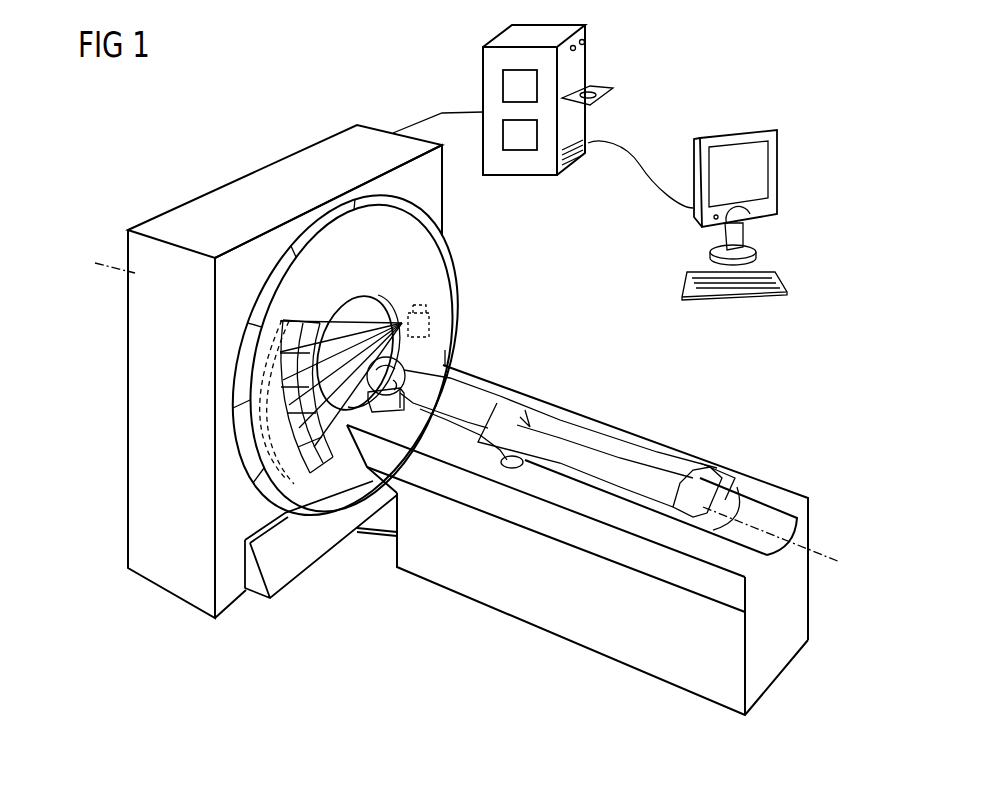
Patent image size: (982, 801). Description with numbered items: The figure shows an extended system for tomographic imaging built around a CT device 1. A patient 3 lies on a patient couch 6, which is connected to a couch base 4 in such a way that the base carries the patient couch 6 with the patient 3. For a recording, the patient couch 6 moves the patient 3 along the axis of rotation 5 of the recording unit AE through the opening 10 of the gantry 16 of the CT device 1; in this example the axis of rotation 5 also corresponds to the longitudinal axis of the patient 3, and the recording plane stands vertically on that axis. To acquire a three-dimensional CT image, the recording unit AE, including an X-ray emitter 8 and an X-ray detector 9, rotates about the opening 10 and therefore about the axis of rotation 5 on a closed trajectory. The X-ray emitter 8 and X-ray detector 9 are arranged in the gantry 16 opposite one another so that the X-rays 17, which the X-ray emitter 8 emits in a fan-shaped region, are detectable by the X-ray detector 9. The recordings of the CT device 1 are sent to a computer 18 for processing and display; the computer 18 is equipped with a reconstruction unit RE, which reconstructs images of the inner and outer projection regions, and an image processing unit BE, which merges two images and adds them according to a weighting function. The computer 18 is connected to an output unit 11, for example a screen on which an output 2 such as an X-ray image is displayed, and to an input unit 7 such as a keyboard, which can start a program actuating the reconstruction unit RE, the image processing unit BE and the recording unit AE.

The CT device 1 is at (172, 154).
The output 2 is at (730, 155).
The patient 3 is at (485, 402).
The couch base 4 is at (572, 617).
The axis of rotation 5 is at (830, 550).
The patient couch 6 is at (775, 495).
The input unit 7 is at (683, 285).
The X-ray emitter 8 is at (431, 320).
The X-ray detector 9 is at (292, 463).
The opening 10 is at (343, 318).
The output unit 11 is at (755, 132).
The gantry 16 is at (279, 183).
The X-rays 17 is at (375, 315).
The computer 18 is at (575, 70).
The reconstruction unit RE is at (503, 86).
The image processing unit BE is at (517, 150).
The recording unit AE is at (466, 296).